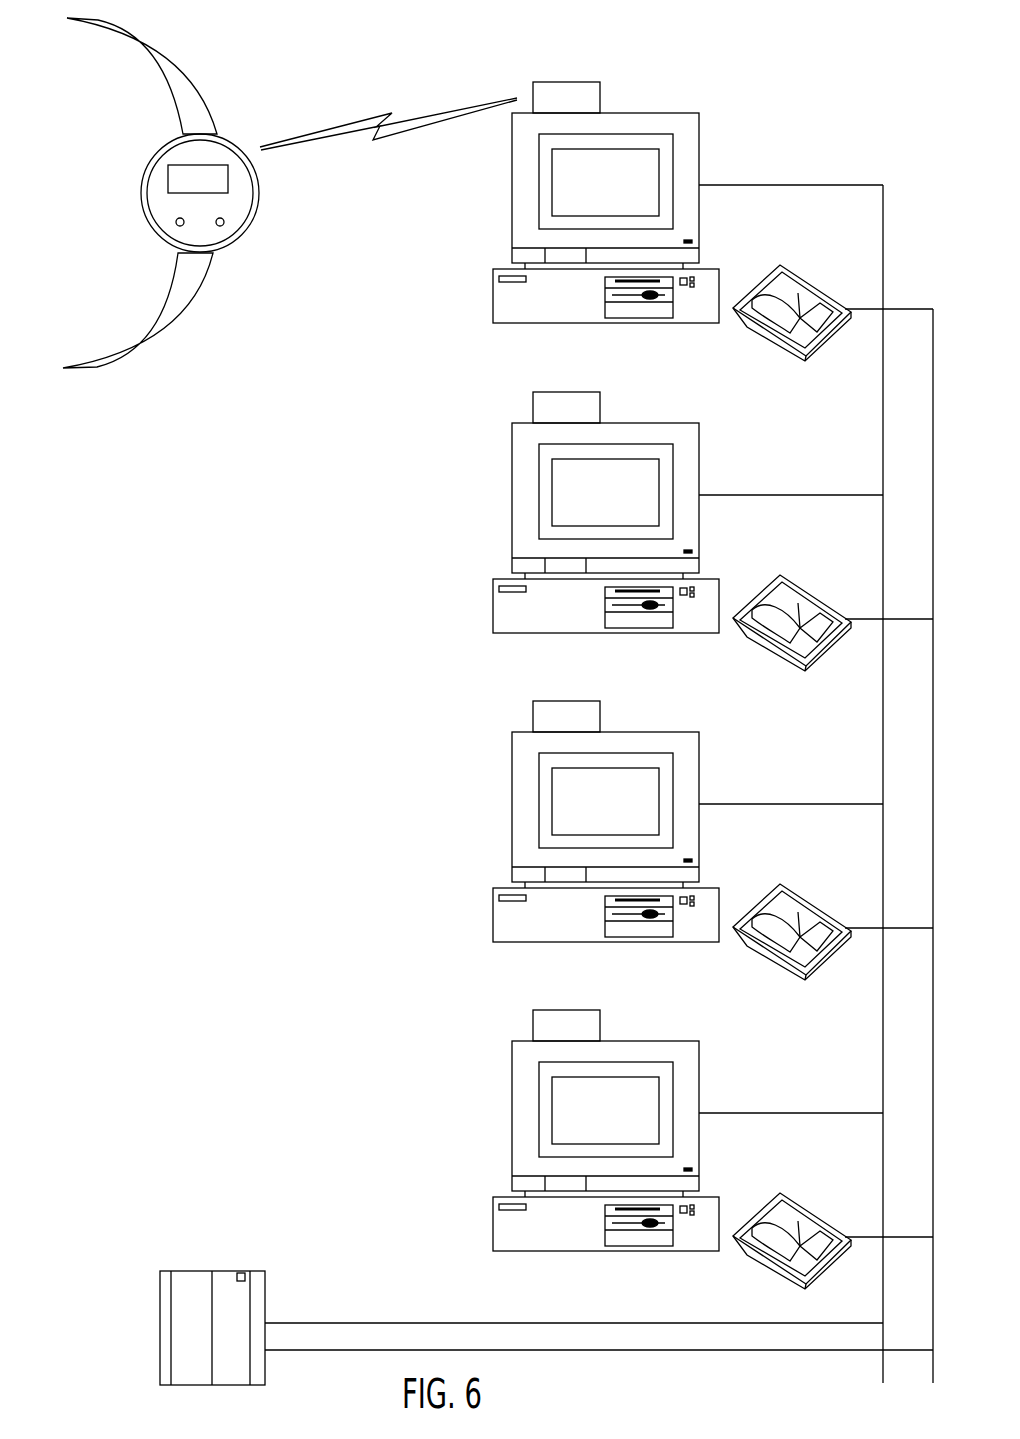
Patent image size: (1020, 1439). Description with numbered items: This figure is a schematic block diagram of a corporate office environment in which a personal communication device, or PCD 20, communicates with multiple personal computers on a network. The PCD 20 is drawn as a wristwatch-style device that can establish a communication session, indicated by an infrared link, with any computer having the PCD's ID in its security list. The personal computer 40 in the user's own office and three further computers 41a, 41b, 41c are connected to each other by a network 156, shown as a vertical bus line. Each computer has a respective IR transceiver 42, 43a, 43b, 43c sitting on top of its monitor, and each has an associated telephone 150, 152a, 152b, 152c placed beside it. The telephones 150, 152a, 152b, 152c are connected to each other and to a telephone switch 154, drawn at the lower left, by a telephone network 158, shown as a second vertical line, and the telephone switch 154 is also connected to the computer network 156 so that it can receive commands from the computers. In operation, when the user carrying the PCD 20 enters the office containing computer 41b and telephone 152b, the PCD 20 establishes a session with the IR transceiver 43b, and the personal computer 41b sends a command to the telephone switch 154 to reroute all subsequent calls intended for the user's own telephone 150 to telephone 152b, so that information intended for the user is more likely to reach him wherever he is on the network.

The PCD 20 is at (222, 137).
The personal computer 40 is at (699, 128).
The IR transceiver 42 is at (600, 97).
The computer 41a is at (688, 524).
The IR transceiver 43a is at (602, 402).
The computer 41b is at (688, 833).
The IR transceiver 43b is at (602, 711).
The computer 41c is at (688, 1142).
The IR transceiver 43c is at (602, 1020).
The telephone 150 is at (798, 280).
The telephone 152a is at (833, 618).
The telephone 152b is at (833, 927).
The telephone 152c is at (833, 1236).
The telephone switch 154 is at (267, 1292).
The network 156 is at (885, 413).
The telephone network 158 is at (937, 477).